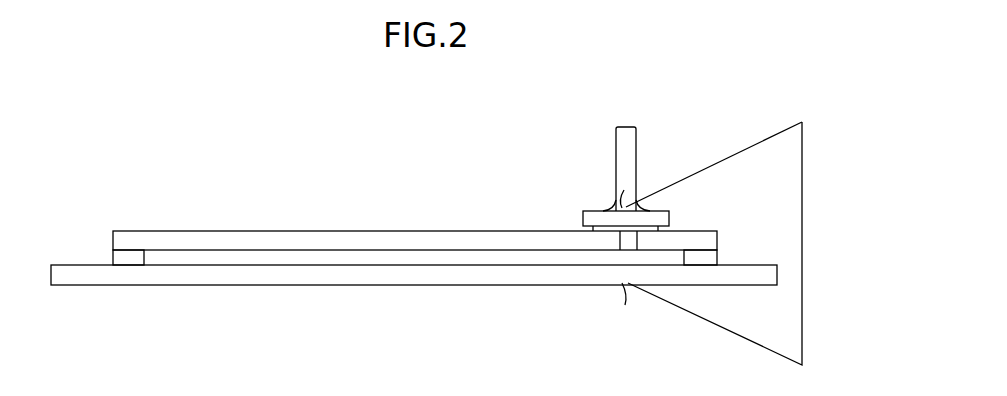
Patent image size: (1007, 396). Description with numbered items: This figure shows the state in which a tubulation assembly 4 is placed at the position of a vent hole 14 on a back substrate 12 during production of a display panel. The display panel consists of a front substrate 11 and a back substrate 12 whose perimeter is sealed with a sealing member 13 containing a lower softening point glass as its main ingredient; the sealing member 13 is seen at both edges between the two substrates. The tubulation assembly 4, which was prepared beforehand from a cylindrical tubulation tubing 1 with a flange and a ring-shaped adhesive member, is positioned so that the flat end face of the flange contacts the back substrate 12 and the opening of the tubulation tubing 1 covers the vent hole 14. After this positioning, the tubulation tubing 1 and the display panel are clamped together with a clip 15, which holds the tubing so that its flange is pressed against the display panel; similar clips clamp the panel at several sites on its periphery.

The tubulation tubing 1 is at (627, 153).
The tubulation assembly 4 is at (572, 178).
The front substrate 11 is at (335, 273).
The back substrate 12 is at (310, 245).
The sealing member 13 is at (113, 259).
The vent hole 14 is at (617, 243).
The clip 15 is at (803, 297).